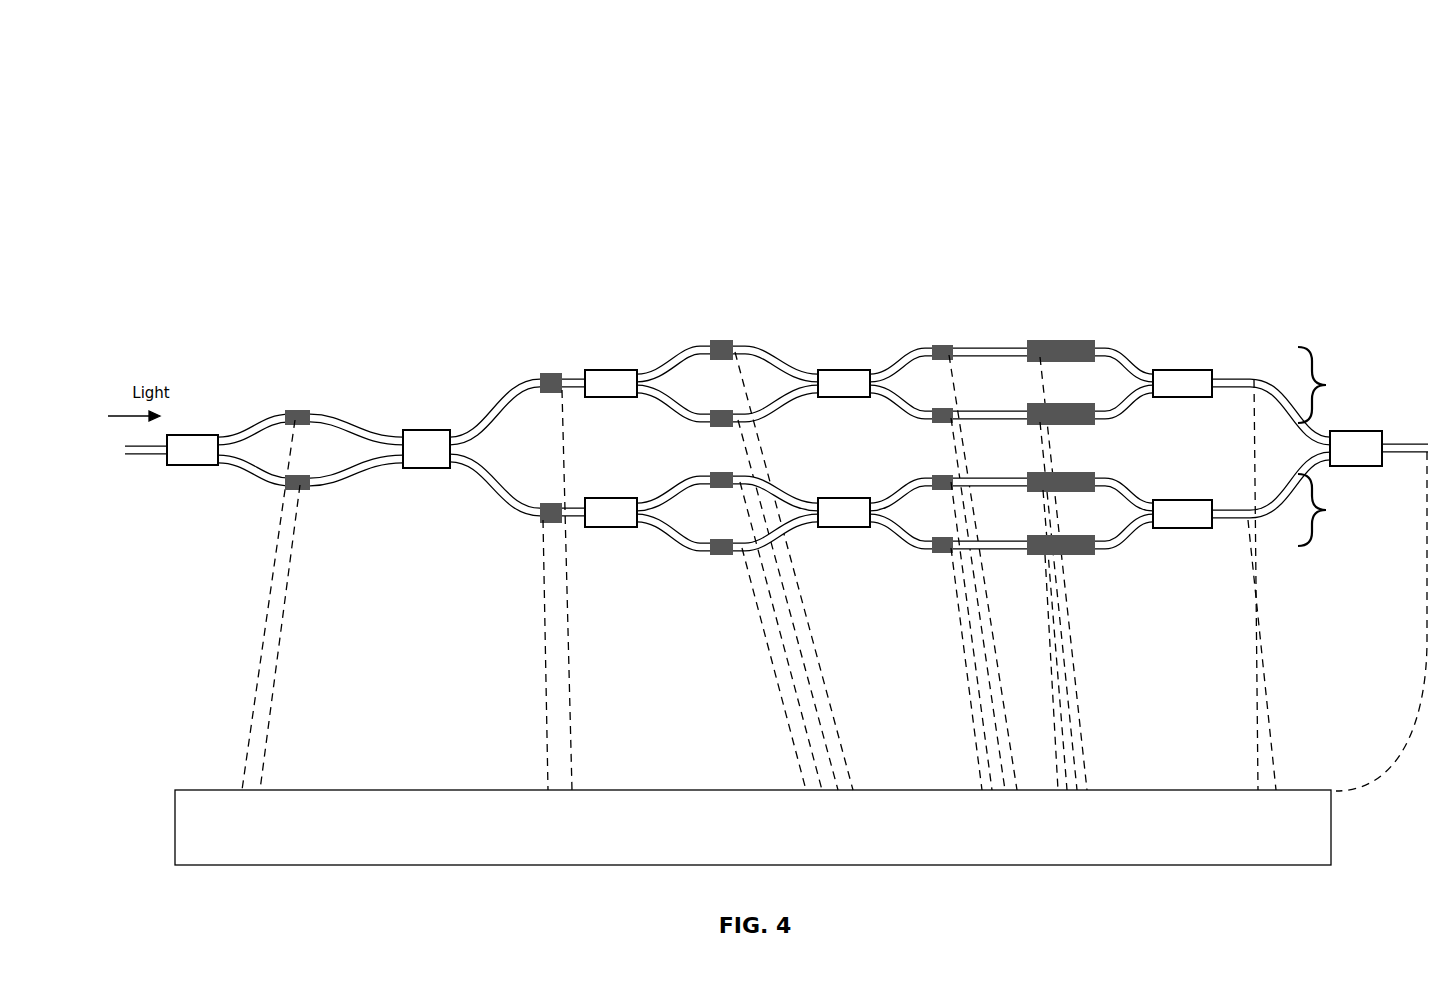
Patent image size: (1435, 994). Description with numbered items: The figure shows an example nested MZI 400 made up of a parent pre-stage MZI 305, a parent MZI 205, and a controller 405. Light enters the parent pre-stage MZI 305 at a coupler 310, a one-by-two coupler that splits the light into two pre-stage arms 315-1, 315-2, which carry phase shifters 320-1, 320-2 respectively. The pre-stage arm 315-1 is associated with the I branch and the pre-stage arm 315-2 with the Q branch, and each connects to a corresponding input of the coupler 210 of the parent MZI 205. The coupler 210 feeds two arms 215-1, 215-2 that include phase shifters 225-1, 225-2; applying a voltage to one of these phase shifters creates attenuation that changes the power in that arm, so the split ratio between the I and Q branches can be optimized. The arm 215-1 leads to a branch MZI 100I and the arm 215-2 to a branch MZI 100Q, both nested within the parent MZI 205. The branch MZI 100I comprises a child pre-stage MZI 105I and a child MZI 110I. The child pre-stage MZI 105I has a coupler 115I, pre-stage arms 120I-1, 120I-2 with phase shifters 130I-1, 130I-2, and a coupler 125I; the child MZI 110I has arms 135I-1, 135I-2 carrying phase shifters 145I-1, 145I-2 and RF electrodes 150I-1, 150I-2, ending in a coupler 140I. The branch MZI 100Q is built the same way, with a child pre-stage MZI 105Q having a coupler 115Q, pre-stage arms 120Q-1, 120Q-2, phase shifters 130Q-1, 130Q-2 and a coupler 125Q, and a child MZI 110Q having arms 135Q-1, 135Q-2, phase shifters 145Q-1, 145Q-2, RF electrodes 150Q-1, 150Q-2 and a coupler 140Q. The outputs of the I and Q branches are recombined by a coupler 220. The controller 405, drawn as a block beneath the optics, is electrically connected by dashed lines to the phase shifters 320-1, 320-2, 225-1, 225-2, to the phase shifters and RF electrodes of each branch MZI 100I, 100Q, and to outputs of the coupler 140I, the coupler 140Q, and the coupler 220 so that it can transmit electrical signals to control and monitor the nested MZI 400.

The nested MZI 400 is at (240, 38).
The controller 405 is at (753, 827).
The parent pre-stage MZI 305 is at (428, 369).
The coupler 310 is at (192, 450).
The pre-stage arm 315-1 is at (250, 426).
The pre-stage arm 315-2 is at (252, 477).
The phase shifter 320-1 is at (306, 412).
The phase shifter 320-2 is at (302, 488).
The coupler 210 is at (426, 449).
The arm 215-1 is at (462, 434).
The arm 215-2 is at (468, 470).
The phase shifter 225-1 is at (553, 395).
The phase shifter 225-2 is at (543, 508).
The parent MZI 205 is at (1370, 128).
The branch MZI 100I is at (1178, 201).
The branch MZI 100Q is at (607, 690).
The child pre-stage MZI 105I is at (608, 278).
The child pre-stage MZI 105Q is at (607, 607).
The child MZI 110I is at (1178, 278).
The child MZI 110Q is at (868, 607).
The coupler 115I is at (611, 383).
The coupler 115Q is at (611, 512).
The pre-stage arm 120I-1 is at (652, 372).
The pre-stage arm 120I-2 is at (646, 408).
The pre-stage arm 120Q-1 is at (655, 502).
The pre-stage arm 120Q-2 is at (650, 537).
The coupler 125I is at (844, 383).
The coupler 125Q is at (844, 512).
The phase shifter 130I-1 is at (721, 345).
The phase shifter 130I-2 is at (722, 411).
The phase shifter 130Q-1 is at (712, 478).
The phase shifter 130Q-2 is at (728, 553).
The arm 135I-1 is at (890, 370).
The arm 135I-2 is at (880, 405).
The arm 135Q-1 is at (890, 500).
The arm 135Q-2 is at (880, 534).
The coupler 140I is at (1182, 383).
The coupler 140Q is at (1182, 514).
The phase shifter 145I-1 is at (945, 345).
The phase shifter 145I-2 is at (942, 410).
The phase shifter 145Q-1 is at (932, 490).
The phase shifter 145Q-2 is at (945, 553).
The RF electrode 150I-1 is at (1072, 342).
The RF electrode 150I-2 is at (1060, 411).
The RF electrode 150Q-1 is at (1068, 478).
The RF electrode 150Q-2 is at (1068, 548).
The coupler 220 is at (1356, 448).